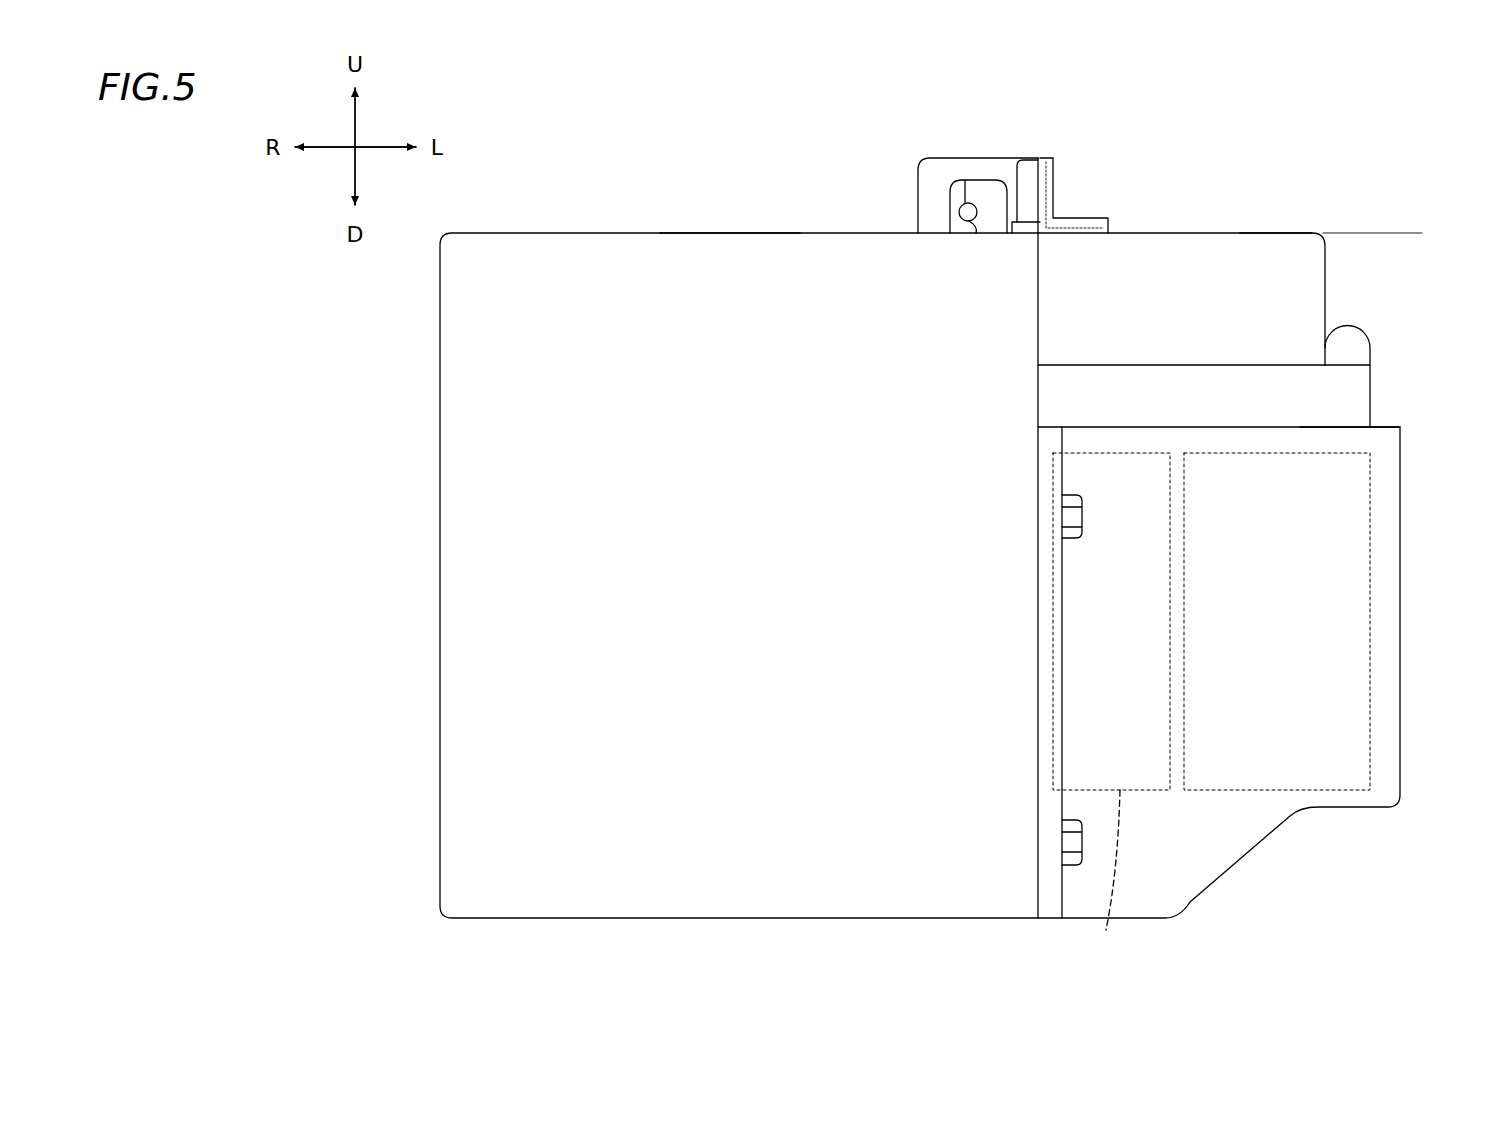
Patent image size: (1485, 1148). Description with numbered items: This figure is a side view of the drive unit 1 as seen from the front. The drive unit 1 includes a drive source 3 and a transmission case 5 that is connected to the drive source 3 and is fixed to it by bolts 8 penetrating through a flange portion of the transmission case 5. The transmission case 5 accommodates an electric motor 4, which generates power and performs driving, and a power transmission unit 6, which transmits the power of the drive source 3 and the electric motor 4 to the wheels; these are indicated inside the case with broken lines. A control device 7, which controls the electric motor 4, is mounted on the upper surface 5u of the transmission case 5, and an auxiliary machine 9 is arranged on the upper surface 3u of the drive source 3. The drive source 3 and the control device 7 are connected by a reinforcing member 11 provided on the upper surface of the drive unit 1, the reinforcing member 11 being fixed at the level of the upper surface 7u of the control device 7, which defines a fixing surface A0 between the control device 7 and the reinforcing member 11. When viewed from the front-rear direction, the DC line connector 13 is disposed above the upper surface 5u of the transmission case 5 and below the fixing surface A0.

The drive unit 1 is at (1177, 130).
The drive source 3 is at (699, 538).
The upper surface of drive source 3u is at (660, 233).
The electric motor 4 is at (1370, 598).
The transmission case 5 is at (1256, 659).
The upper surface of transmission case 5u is at (1348, 425).
The power transmission unit 6 is at (1109, 877).
The control device 7 is at (1204, 253).
The upper surface of control device 7u is at (1265, 233).
The bolts 8 is at (1082, 513).
The auxiliary machine 9 is at (988, 190).
The reinforcing member 11 is at (1050, 158).
The DC line connector 13 is at (1355, 356).
The fixing surface A0 is at (1395, 233).